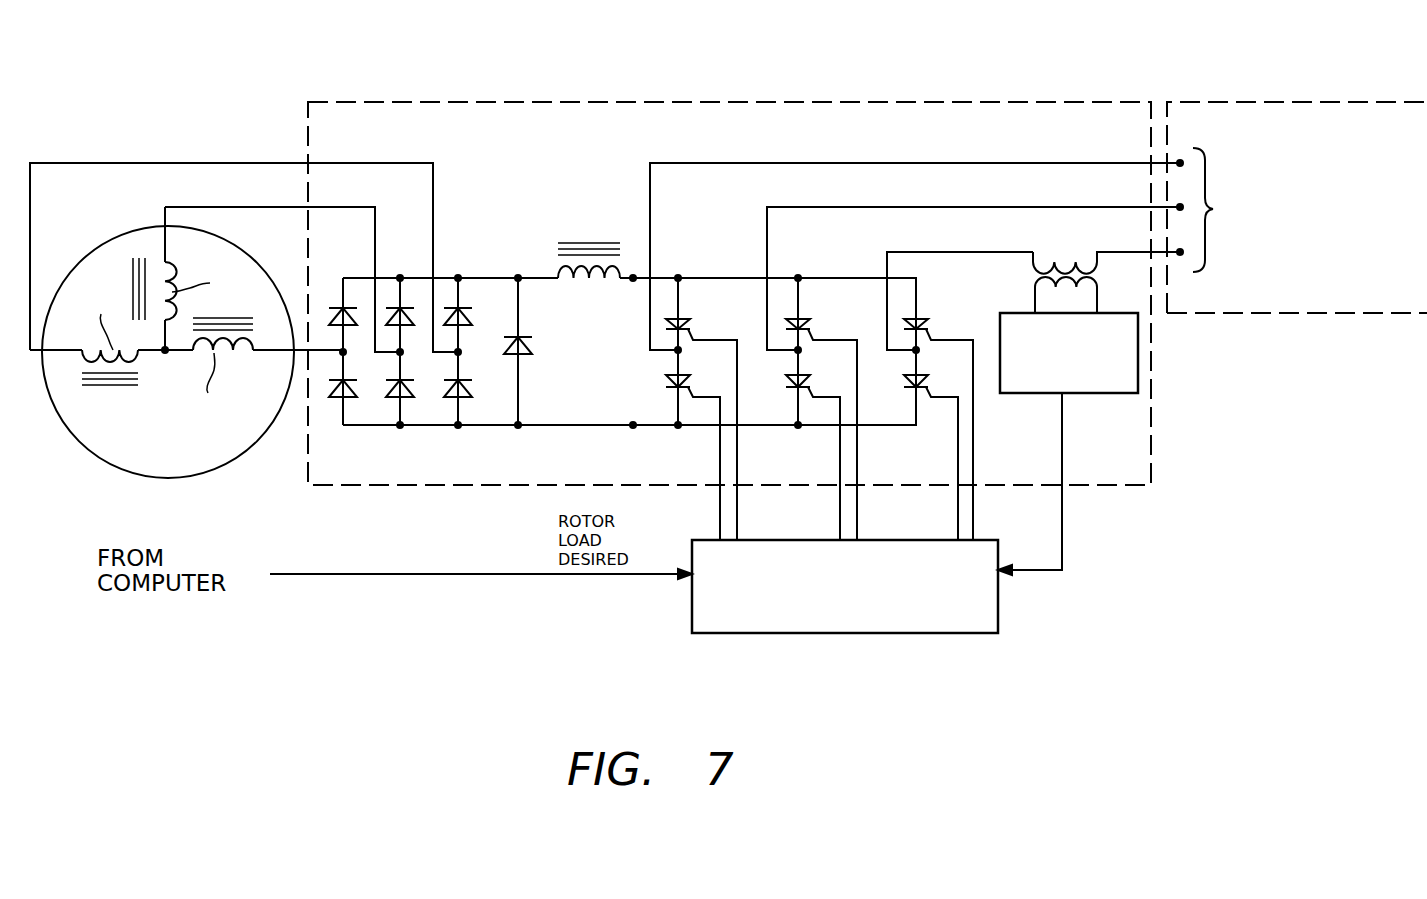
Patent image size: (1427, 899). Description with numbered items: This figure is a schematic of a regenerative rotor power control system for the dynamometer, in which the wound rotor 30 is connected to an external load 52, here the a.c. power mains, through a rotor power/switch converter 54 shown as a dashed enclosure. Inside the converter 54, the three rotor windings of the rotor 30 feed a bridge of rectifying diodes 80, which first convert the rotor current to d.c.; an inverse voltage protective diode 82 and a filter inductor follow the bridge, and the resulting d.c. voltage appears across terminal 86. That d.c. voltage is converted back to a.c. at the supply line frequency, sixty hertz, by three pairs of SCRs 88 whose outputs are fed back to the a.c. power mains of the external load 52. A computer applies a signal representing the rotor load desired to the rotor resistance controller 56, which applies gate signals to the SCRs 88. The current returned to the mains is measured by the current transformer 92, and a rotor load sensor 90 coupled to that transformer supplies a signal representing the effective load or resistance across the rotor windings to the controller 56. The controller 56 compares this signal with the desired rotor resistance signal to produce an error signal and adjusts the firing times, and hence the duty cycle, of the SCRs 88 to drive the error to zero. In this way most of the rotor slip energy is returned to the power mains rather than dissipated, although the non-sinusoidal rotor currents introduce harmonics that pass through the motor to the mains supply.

The rotor 30 is at (112, 240).
The external load resistance 52 is at (1282, 101).
The rotor power/switch converter 54 is at (977, 101).
The rotor resistance controller 56 is at (1000, 628).
The rectifying diodes 80 is at (466, 318).
The inverse voltage protective diode 82 is at (528, 350).
The terminal 86 is at (631, 290).
The SCRs 88 is at (692, 322).
The rotor load sensor 90 is at (1083, 395).
The current transformer 92 is at (1068, 251).